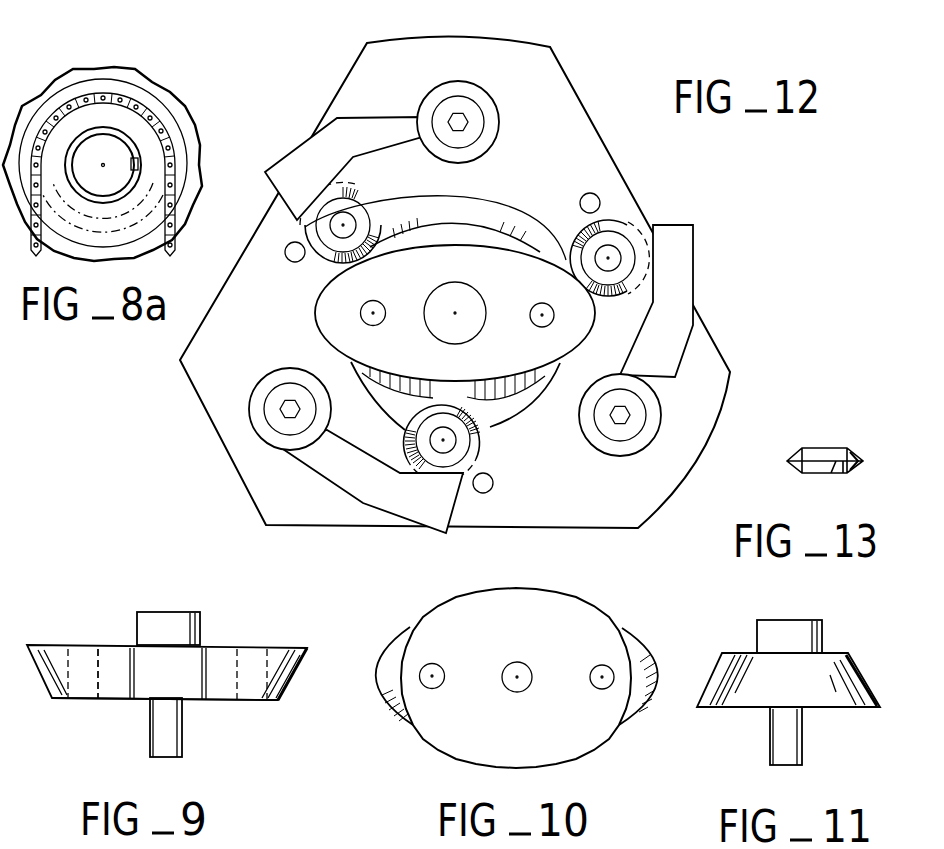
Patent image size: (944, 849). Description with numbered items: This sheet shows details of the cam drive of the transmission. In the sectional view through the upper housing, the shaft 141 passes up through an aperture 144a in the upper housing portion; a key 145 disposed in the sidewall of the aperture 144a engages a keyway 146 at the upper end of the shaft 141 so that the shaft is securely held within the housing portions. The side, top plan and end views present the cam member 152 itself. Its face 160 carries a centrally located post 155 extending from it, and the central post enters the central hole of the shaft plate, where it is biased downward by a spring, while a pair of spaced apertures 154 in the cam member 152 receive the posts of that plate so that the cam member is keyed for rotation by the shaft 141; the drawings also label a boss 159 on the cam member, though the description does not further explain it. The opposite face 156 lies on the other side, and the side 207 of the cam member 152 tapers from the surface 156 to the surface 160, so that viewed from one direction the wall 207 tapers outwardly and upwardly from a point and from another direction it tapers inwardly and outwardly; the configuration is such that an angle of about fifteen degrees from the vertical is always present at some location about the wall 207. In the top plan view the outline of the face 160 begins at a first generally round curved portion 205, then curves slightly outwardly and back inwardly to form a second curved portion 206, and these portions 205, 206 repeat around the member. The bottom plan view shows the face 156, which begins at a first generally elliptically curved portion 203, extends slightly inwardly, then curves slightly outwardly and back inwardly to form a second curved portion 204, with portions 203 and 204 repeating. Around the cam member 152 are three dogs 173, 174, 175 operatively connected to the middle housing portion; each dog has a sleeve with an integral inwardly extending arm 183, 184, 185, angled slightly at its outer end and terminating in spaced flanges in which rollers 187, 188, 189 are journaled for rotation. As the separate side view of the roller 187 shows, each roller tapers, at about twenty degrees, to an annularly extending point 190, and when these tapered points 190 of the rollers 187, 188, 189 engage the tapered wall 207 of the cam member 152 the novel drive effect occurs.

In FIG. 8A, the shaft 141 is at (110, 147).
In FIG. 8A, the aperture 144a is at (100, 122).
In FIG. 8A, the key 145 is at (140, 160).
In FIG. 8A, the keyway 146 is at (131, 166).
In FIG. 9, the cam member 152 is at (311, 651).
In FIG. 12, the spaced apertures 154 is at (376, 306).
In FIG. 9, the spaced apertures 154 is at (97, 658).
In FIG. 9, the central post 155 is at (183, 737).
In FIG. 10, the central post 155 is at (531, 673).
In FIG. 11, the central post 155 is at (802, 745).
In FIG. 12, the face 156 is at (412, 354).
In FIG. 9, the face 156 is at (222, 647).
In FIG. 11, the face 156 is at (745, 652).
In FIG. 12, the boss 159 is at (488, 323).
In FIG. 9, the boss 159 is at (182, 612).
In FIG. 11, the boss 159 is at (823, 627).
In FIG. 9, the surface 160 is at (115, 702).
In FIG. 10, the surface 160 is at (498, 727).
In FIG. 11, the surface 160 is at (733, 708).
In FIG. 12, the dog 173 is at (290, 153).
In FIG. 12, the dog 174 is at (693, 267).
In FIG. 12, the dog 175 is at (410, 524).
In FIG. 12, the arm 183 is at (392, 102).
In FIG. 12, the arm 184 is at (680, 362).
In FIG. 12, the arm 185 is at (330, 485).
In FIG. 12, the roller 187 is at (363, 202).
In FIG. 13, the roller 187 is at (792, 452).
In FIG. 12, the roller 188 is at (605, 215).
In FIG. 12, the roller 189 is at (487, 448).
In FIG. 13, the annularly extending point 190 is at (865, 457).
In FIG. 12, the first generally elliptically curved portion 203 is at (314, 332).
In FIG. 12, the second curved portion 204 is at (468, 240).
In FIG. 10, the first generally round curved portion 205 is at (400, 662).
In FIG. 10, the second curved portion 206 is at (527, 588).
In FIG. 9, the side 207 is at (292, 677).
In FIG. 11, the side 207 is at (727, 680).